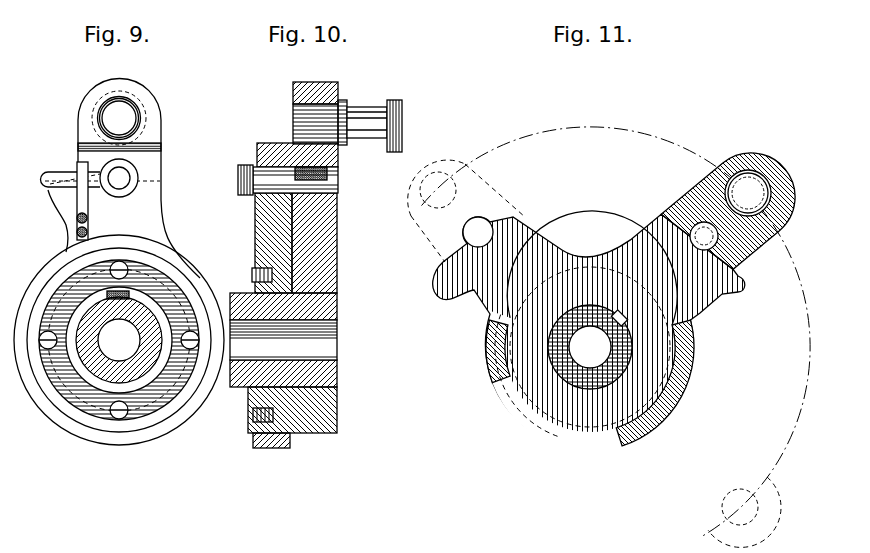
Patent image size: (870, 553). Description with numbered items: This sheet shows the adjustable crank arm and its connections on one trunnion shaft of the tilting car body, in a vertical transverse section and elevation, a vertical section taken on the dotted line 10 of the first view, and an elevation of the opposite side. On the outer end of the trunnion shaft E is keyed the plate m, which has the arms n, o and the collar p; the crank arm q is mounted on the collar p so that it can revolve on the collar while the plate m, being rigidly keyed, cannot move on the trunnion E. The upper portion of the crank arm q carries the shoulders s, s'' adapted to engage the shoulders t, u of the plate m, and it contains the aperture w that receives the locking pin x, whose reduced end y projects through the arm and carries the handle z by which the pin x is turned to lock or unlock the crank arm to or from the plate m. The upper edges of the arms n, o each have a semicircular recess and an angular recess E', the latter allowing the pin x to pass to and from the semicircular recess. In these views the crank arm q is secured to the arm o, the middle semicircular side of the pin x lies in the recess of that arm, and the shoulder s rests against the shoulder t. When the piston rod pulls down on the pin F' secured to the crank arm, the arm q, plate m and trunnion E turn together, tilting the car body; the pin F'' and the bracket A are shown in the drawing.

In FIG. 9, the section line 10— 10 is at (119, 483).
In FIG. 9, the crank arm q is at (124, 179).
In FIG. 10, the crank arm q is at (296, 187).
In FIG. 11, the crank arm q is at (788, 205).
In FIG. 9, the plate m is at (198, 392).
In FIG. 10, the plate m is at (292, 359).
In FIG. 9, the collar p is at (82, 412).
In FIG. 10, the collar p is at (253, 266).
In FIG. 9, the trunnion shaft E is at (119, 340).
In FIG. 10, the trunnion shaft E is at (294, 340).
In FIG. 11, the trunnion shaft E is at (590, 347).
In FIG. 9, the pin F' is at (131, 106).
In FIG. 10, the pin F' is at (347, 120).
In FIG. 11, the bolt hole in arm end F'' is at (748, 193).
In FIG. 9, the handle z is at (50, 171).
In FIG. 10, the handle z is at (246, 165).
In FIG. 11, the handle z is at (760, 290).
In FIG. 9, the reduced end y is at (138, 182).
In FIG. 10, the reduced end y is at (240, 178).
In FIG. 9, the locking pin x is at (130, 173).
In FIG. 10, the locking pin x is at (295, 180).
In FIG. 11, the locking pin x is at (704, 236).
In FIG. 10, the aperture w is at (252, 197).
In FIG. 9, the bracket A is at (88, 212).
In FIG. 11, the angular recess E' is at (589, 312).
In FIG. 11, the shoulder s is at (747, 263).
In FIG. 11, the arm seat s'' is at (672, 200).
In FIG. 11, the shoulder t is at (757, 275).
In FIG. 11, the arm o is at (700, 312).
In FIG. 11, the shoulder u is at (443, 262).
In FIG. 11, the arm n is at (490, 300).